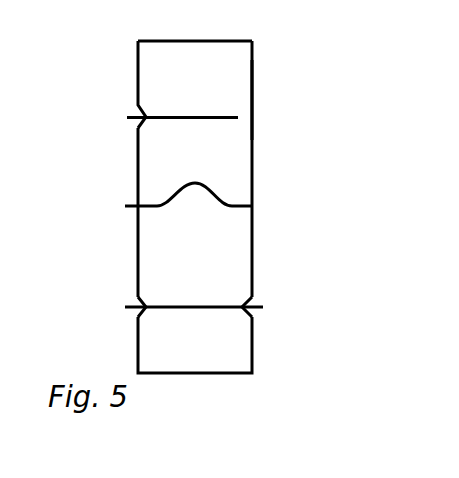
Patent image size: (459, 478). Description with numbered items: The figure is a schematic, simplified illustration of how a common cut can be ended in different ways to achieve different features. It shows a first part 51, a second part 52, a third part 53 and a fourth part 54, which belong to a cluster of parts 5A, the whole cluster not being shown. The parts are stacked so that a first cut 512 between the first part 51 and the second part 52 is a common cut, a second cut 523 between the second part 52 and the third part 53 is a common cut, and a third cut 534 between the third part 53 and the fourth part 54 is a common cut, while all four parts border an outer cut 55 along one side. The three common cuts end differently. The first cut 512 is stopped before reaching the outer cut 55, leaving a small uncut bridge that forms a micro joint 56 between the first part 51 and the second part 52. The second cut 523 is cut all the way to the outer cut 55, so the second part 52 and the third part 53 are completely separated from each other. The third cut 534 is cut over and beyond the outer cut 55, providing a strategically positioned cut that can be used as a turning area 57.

The cluster of parts 5A is at (125, 275).
The first part 51 is at (195, 84).
The second part 52 is at (156, 165).
The third part 53 is at (156, 251).
The fourth part 54 is at (195, 345).
The outer cut 55 is at (253, 247).
The micro joint 56 is at (245, 115).
The turning area 57 is at (261, 308).
The first cut 512 is at (190, 117).
The second cut 523 is at (182, 190).
The third cut 534 is at (198, 306).